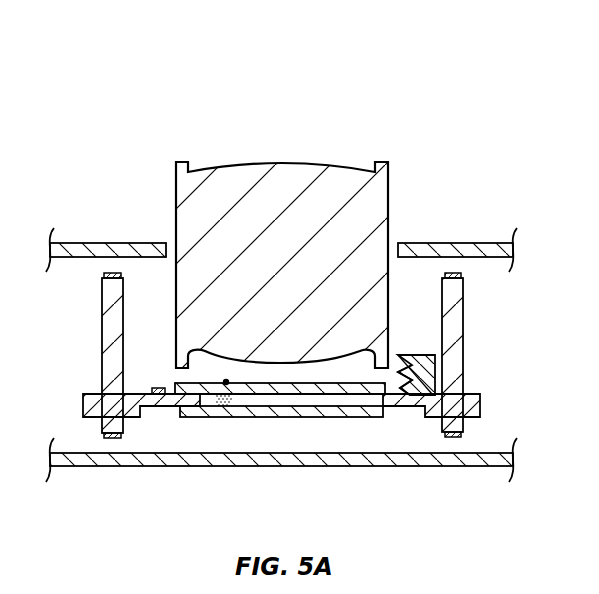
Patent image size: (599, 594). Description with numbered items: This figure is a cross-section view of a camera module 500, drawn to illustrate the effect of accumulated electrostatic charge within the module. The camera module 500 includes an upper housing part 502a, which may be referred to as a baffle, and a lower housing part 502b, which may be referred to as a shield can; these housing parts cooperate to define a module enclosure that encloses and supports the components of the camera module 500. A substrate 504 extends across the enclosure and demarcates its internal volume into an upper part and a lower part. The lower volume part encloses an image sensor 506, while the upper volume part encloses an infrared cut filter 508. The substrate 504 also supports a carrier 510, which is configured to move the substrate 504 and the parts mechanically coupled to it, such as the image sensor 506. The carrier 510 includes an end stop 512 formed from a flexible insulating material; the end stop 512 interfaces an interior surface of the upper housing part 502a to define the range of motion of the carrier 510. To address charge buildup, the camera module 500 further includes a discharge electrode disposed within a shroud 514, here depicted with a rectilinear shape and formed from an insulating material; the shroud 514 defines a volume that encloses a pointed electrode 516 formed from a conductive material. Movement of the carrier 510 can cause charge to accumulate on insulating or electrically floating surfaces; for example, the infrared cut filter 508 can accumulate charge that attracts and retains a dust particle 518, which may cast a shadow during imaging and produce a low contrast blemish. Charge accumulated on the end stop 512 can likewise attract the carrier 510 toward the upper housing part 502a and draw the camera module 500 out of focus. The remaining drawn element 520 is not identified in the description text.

The camera module 500 is at (141, 72).
The upper housing part 502a is at (495, 243).
The lower housing part 502b is at (426, 467).
The substrate 504 is at (480, 402).
The image sensor 506 is at (198, 417).
The infrared cut filter 508 is at (250, 406).
The carrier 510 is at (463, 327).
The end stop 512 is at (448, 272).
The shroud 514 is at (437, 371).
The pointed electrode 516 is at (403, 382).
The dust particle 518 is at (226, 382).
The lens 520 is at (383, 162).